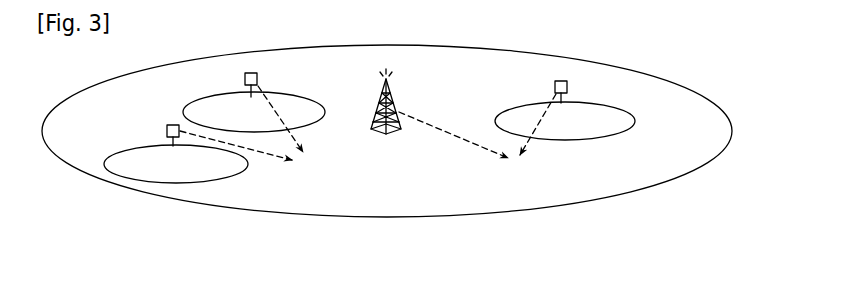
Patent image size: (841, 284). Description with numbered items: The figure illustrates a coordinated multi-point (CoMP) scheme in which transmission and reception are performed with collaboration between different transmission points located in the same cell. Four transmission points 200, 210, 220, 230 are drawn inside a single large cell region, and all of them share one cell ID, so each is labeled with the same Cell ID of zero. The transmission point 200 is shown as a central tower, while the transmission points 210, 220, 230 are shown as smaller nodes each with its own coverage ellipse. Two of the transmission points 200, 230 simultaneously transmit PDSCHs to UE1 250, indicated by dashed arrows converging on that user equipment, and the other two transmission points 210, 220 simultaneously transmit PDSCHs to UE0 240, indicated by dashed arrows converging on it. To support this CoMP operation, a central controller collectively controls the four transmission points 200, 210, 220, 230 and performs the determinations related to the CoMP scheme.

The transmission point 200 is at (392, 88).
The transmission point 210 is at (243, 79).
The transmission point 220 is at (165, 131).
The transmission point 230 is at (553, 86).
The UE0 240 is at (312, 178).
The UE1 250 is at (515, 178).